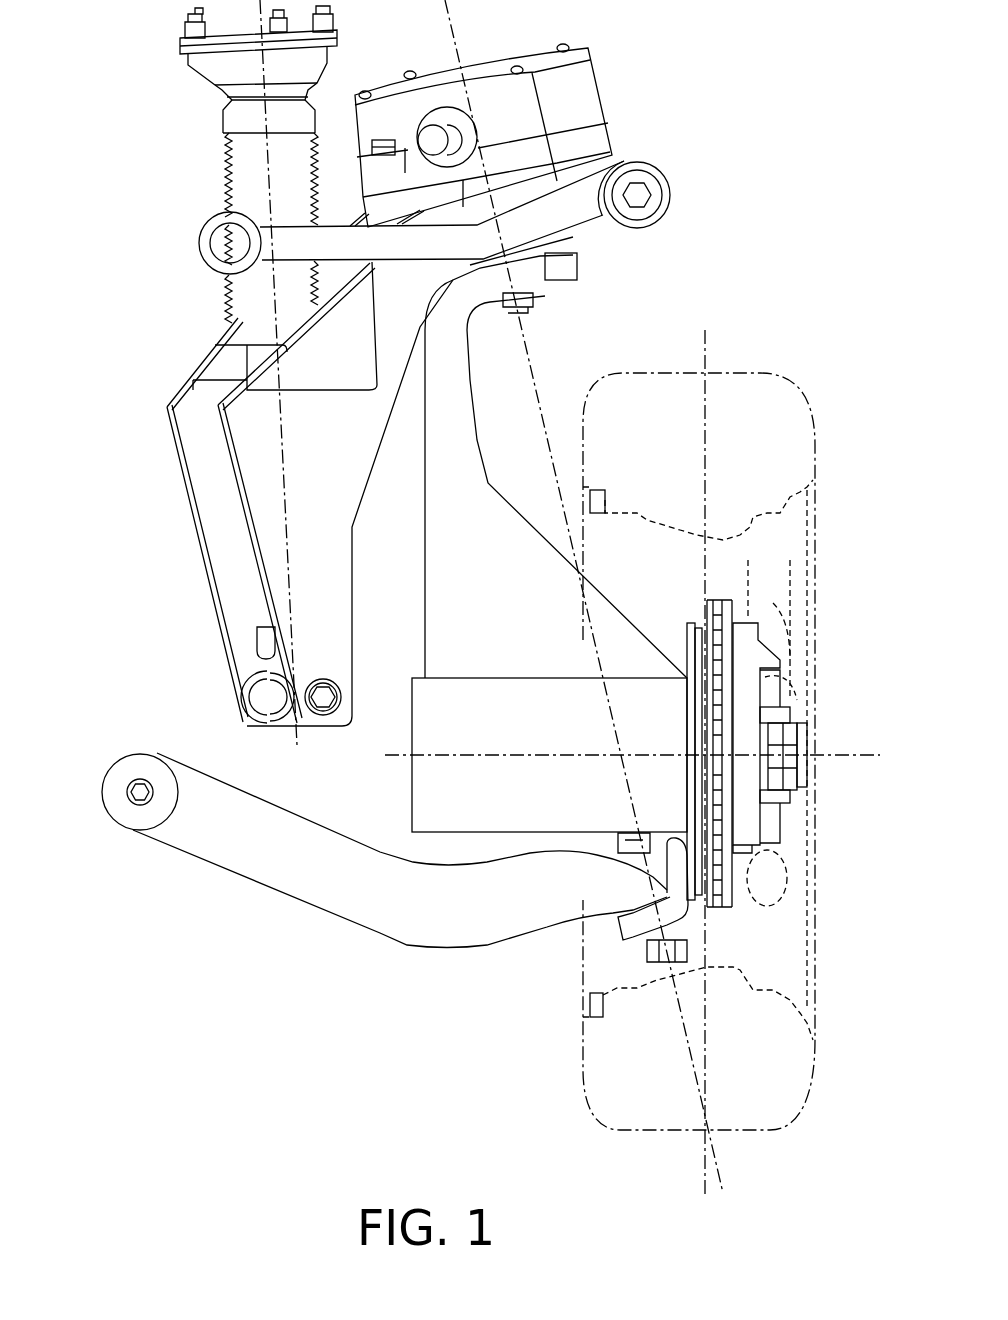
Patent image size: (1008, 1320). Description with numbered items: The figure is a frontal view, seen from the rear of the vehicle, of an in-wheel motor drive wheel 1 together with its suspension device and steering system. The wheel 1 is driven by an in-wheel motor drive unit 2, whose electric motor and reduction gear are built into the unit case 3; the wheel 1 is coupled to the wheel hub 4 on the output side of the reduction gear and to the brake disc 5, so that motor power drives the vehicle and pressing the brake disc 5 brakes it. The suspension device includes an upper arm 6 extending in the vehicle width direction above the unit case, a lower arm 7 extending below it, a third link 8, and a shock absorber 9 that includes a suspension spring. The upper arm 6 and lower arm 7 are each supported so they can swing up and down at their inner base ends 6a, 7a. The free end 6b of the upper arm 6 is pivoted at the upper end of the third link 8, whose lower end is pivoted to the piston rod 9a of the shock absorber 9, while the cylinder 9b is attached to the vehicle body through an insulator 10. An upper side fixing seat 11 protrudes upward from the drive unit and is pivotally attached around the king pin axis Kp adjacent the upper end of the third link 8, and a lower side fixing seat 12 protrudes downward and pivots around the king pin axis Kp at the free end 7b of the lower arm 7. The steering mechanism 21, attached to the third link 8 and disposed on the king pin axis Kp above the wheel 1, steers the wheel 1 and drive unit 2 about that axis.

The wheel 1 is at (790, 354).
The in-wheel motor drive unit 2 is at (591, 755).
The unit case 3 is at (437, 712).
The wheel hub 4 is at (748, 810).
The brake disc 5 is at (727, 733).
The upper arm 6 is at (415, 209).
The base end 6a is at (200, 240).
The free end 6b is at (669, 176).
The lower arm 7 is at (366, 866).
The base end 7a is at (107, 778).
The free end 7b is at (633, 888).
The third link 8 is at (176, 450).
The shock absorber 9 is at (214, 150).
The piston rod 9a is at (262, 642).
The cylinder 9b is at (223, 105).
The insulator 10 is at (213, 66).
The upper side fixing seat 11 is at (473, 370).
The lower side fixing seat 12 is at (620, 940).
The steering mechanism 21 is at (607, 95).
The king pin axis Kp is at (540, 390).